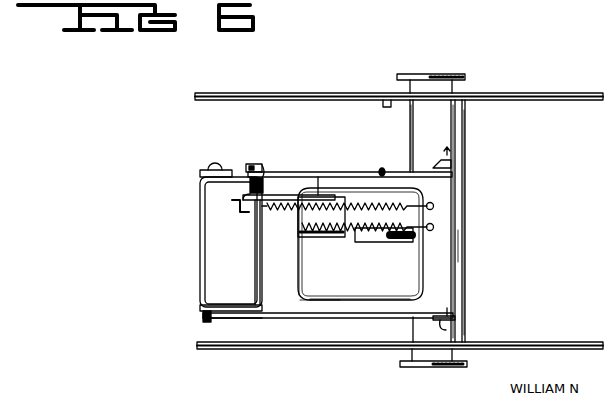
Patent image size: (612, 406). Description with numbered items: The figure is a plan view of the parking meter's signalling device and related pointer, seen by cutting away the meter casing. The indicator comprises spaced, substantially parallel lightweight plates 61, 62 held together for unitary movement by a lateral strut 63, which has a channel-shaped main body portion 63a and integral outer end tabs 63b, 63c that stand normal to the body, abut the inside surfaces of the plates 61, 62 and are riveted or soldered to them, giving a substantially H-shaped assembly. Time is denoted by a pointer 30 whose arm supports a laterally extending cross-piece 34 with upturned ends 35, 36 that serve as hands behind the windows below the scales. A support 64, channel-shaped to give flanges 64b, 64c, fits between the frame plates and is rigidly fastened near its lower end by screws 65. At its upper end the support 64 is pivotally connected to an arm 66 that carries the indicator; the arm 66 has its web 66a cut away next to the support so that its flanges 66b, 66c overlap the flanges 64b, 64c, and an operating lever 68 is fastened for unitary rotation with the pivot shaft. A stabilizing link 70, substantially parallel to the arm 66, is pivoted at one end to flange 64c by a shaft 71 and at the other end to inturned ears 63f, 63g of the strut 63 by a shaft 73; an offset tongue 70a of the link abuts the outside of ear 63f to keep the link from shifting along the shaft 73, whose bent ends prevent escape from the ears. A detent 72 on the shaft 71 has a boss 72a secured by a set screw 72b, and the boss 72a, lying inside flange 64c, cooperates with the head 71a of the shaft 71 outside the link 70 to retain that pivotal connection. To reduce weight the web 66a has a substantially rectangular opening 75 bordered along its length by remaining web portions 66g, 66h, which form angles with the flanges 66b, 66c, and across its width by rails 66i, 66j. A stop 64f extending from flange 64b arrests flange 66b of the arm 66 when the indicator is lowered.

The pointer 30 is at (458, 88).
The cross-piece 34 is at (410, 143).
The upturned end 35 is at (440, 367).
The upturned end 36 is at (427, 74).
The plate 61 is at (540, 342).
The plate 62 is at (540, 93).
The lateral strut 63 is at (466, 163).
The channel-shaped main body portion 63a is at (464, 196).
The outer end tab 63b is at (394, 107).
The outer end tab 63c is at (400, 338).
The inturned ear 63f is at (450, 158).
The inturned ear 63g is at (456, 312).
The support 64 is at (200, 241).
The flange 64b is at (230, 305).
The flange 64c is at (216, 183).
The stop 64f is at (205, 318).
The screw 65 is at (215, 163).
The arm 66 is at (285, 313).
The web 66a is at (302, 280).
The flange 66b is at (233, 320).
The flange 66c is at (253, 164).
The remaining web portion 66g is at (385, 164).
The remaining web portion 66h is at (382, 306).
The rail 66i is at (296, 295).
The rail 66j is at (422, 260).
The operating lever 68 is at (355, 229).
The stabilizing link 70 is at (340, 172).
The offset tongue 70a is at (433, 172).
The shaft 71 is at (254, 249).
The head 71a is at (263, 165).
The detent 72 is at (318, 172).
The boss 72a is at (285, 167).
The set screw 72b is at (264, 180).
The shaft 73 is at (465, 245).
The opening 75 is at (338, 303).